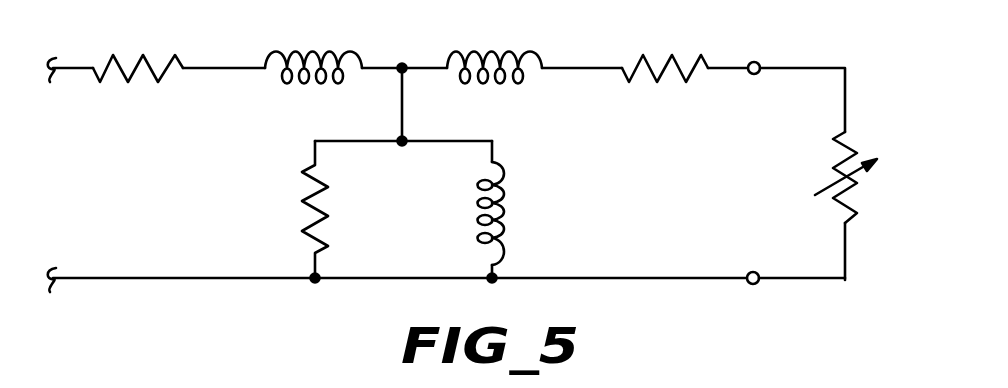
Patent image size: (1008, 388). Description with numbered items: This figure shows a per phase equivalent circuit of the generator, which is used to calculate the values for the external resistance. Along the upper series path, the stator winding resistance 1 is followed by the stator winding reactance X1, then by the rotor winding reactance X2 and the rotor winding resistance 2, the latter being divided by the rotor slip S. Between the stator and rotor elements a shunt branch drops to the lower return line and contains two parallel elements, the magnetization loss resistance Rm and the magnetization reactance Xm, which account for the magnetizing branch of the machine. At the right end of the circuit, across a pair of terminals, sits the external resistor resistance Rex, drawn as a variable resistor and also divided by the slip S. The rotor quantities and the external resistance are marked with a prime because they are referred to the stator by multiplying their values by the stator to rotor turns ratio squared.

The stator winding resistance 1 is at (147, 19).
The stator winding reactance X1 is at (332, 18).
The rotor winding reactance X2 is at (504, 9).
The rotor winding resistance 2 is at (653, 10).
The external resistor resistance Rex is at (880, 180).
The magnetization loss resistance Rm is at (294, 209).
The magnetization reactance Xm is at (520, 213).